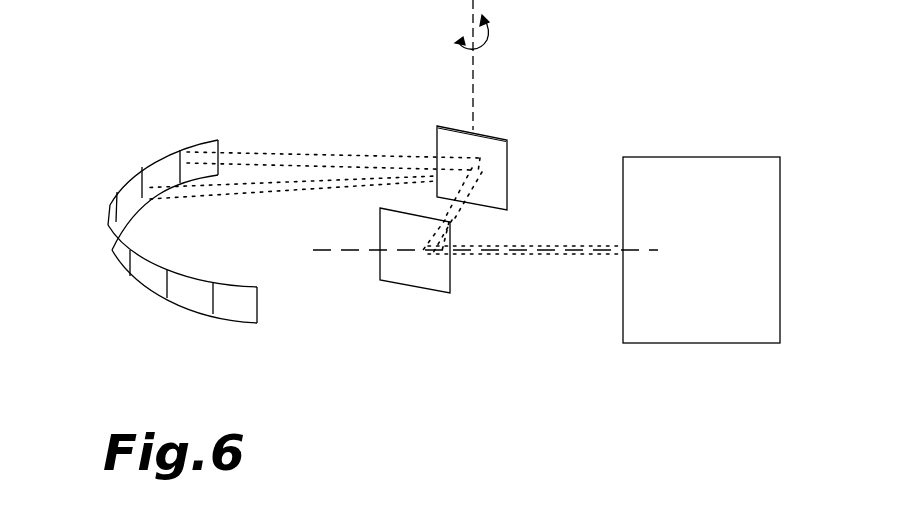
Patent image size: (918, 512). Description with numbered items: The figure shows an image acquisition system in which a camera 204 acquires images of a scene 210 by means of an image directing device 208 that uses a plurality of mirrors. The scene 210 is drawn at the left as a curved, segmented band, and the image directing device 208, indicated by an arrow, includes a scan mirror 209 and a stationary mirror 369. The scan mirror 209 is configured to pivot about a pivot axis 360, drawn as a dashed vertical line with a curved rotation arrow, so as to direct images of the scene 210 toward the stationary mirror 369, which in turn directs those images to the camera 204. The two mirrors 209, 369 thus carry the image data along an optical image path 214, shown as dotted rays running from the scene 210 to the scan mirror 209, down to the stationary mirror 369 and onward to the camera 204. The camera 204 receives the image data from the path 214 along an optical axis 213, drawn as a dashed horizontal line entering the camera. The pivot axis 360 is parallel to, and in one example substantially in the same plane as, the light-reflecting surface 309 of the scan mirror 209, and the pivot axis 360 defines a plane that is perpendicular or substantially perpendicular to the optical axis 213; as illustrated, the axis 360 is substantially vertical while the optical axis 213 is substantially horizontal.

The scene 210 is at (148, 128).
The optical image path 214 is at (440, 212).
The optical axis 213 is at (330, 252).
The pivot axis 360 is at (468, 67).
The scan mirror 209 is at (490, 136).
The light-reflecting surface 309 is at (497, 167).
The stationary mirror 369 is at (426, 292).
The image directing device 208 is at (500, 307).
The camera 204 is at (719, 158).